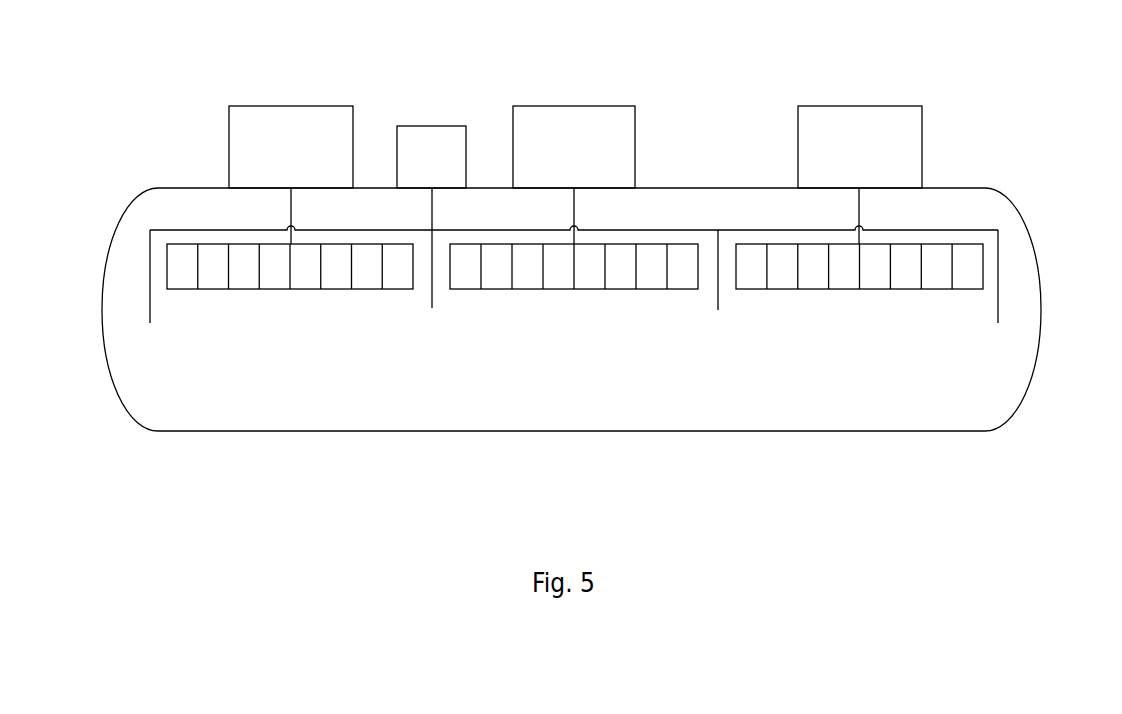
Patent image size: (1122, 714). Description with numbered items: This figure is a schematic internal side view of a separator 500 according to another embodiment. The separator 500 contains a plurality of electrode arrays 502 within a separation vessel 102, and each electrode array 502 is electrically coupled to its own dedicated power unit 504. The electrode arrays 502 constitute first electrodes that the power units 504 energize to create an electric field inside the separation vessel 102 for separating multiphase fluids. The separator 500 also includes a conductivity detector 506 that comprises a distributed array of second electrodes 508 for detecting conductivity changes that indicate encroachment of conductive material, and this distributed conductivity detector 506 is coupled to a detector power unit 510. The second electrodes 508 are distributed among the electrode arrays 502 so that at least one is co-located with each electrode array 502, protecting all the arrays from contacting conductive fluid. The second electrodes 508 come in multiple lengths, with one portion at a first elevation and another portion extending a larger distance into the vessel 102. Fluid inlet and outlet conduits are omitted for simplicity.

The separator 500 is at (132, 97).
The separation vessel 102 is at (1022, 215).
The power unit 504 is at (313, 163).
The detector power unit 510 is at (432, 125).
The conductivity detector 506 is at (190, 230).
The second electrodes 508 is at (150, 323).
The electrode array 502 is at (303, 319).